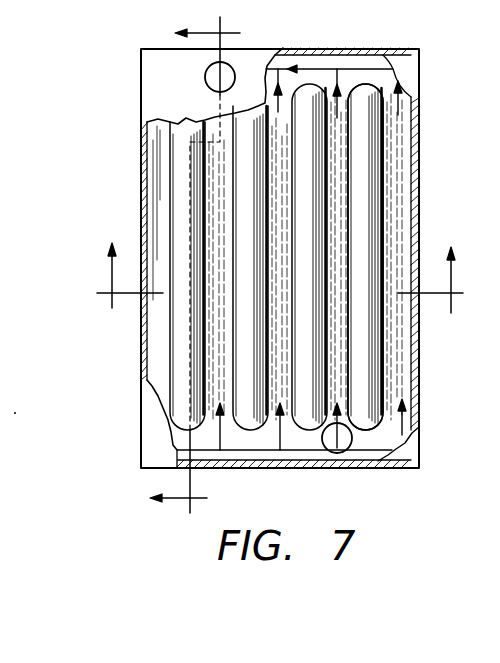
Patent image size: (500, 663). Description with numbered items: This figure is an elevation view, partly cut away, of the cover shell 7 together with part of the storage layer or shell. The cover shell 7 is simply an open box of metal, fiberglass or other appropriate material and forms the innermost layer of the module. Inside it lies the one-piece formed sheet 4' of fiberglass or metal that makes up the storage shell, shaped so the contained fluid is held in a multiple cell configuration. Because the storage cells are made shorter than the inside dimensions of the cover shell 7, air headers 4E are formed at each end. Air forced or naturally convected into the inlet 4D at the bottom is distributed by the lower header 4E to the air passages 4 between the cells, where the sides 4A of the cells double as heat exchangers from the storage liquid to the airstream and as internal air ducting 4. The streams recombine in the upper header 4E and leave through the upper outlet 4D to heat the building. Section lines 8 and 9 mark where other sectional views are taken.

The air passages 4 is at (290, 223).
The one-piece formed sheet 4' is at (303, 254).
The sides of the storage cells 4A is at (380, 187).
The inlet/outlet 4D is at (205, 78).
The air header 4E is at (291, 62).
The cover shell 7 is at (419, 427).
The section line 8- 8 is at (195, 270).
The section line 9- 9 is at (280, 280).